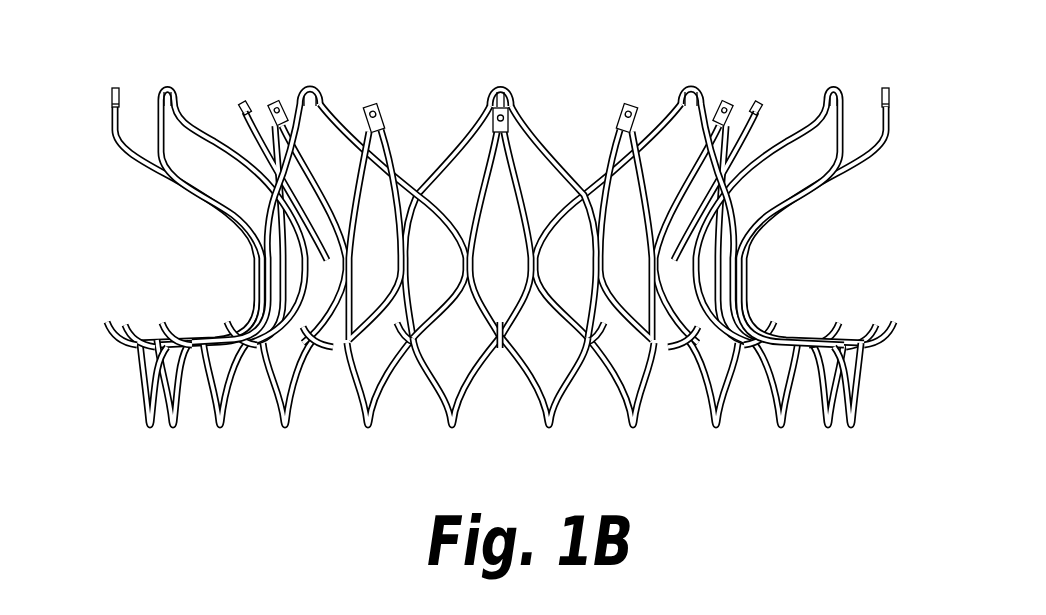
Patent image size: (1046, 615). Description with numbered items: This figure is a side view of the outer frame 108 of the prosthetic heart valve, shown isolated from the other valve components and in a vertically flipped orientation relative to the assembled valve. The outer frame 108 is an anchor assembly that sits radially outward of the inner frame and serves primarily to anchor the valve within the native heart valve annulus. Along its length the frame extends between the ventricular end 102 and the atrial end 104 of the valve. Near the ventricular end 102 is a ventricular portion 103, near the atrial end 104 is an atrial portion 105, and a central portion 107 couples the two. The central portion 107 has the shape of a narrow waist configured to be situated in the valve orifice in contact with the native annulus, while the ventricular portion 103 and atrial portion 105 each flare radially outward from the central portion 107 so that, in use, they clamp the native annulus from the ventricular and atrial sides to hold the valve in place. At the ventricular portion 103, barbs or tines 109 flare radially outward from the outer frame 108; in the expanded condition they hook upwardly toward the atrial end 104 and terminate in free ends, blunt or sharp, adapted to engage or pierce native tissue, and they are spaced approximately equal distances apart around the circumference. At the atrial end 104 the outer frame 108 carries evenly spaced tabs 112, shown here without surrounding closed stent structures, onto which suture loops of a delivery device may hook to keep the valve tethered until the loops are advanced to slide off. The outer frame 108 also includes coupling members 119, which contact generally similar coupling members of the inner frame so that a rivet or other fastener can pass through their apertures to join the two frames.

The outer frame 108 is at (147, 35).
The tabs 112 is at (320, 92).
The coupling members 119 is at (376, 103).
The atrial end 104 is at (501, 90).
The atrial portion 105 is at (890, 118).
The central portion 107 is at (748, 262).
The tines 109 is at (133, 345).
The ventricular portion 103 is at (860, 378).
The ventricular end 102 is at (547, 428).